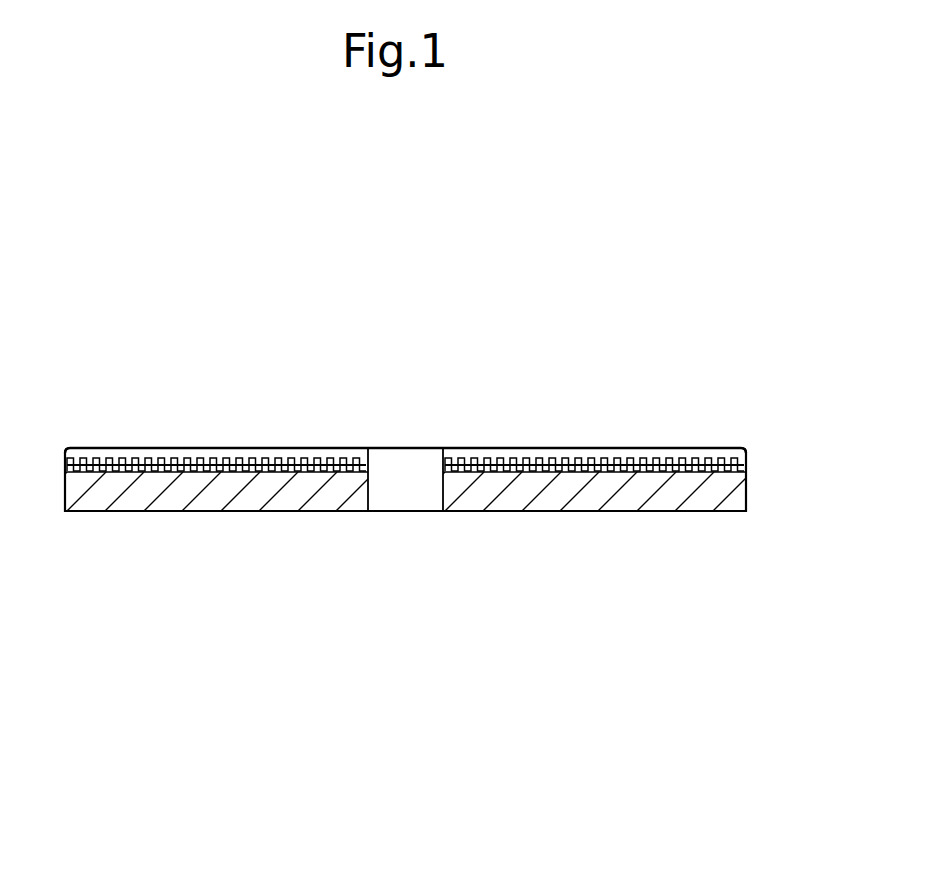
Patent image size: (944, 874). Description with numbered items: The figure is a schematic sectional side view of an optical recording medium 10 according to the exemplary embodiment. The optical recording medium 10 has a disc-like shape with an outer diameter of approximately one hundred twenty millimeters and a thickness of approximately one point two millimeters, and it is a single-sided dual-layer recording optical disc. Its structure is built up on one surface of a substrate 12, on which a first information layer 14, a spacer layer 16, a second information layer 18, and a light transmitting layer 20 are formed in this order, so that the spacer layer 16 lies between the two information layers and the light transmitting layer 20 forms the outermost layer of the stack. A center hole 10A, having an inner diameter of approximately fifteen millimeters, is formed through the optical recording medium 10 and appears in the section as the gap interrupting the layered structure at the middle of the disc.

The optical recording medium 10 is at (423, 299).
The center hole 10A is at (443, 496).
The substrate 12 is at (746, 505).
The first information layer 14 is at (222, 461).
The spacer layer 16 is at (746, 468).
The second information layer 18 is at (289, 459).
The light transmitting layer 20 is at (746, 450).